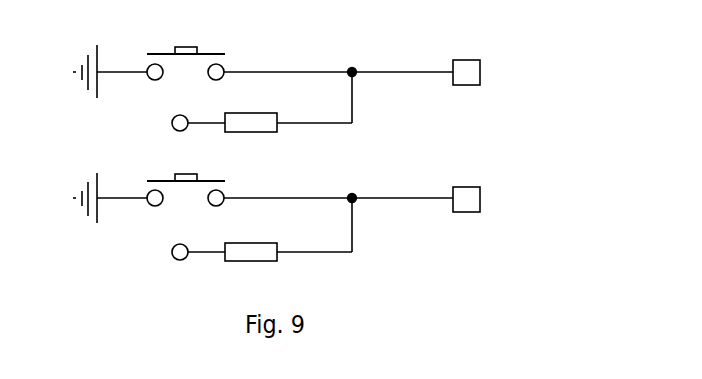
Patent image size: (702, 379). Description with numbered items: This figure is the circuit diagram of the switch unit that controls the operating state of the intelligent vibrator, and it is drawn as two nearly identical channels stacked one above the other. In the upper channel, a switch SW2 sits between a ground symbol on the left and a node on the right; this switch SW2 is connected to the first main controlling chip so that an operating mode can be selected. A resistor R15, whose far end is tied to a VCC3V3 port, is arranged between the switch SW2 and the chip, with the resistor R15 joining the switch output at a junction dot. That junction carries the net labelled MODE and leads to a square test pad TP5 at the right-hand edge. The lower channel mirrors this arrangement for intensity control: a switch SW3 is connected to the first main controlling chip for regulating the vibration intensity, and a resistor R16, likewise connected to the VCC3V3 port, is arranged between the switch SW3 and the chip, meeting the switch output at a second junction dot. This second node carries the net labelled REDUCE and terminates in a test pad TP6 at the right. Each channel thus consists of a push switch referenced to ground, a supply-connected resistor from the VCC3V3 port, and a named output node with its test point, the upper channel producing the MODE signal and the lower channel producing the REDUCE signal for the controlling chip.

The switch SW2 is at (212, 61).
The switch SW3 is at (212, 187).
The resistor R15 is at (270, 102).
The resistor R16 is at (270, 229).
The test point TP5 is at (453, 60).
The test point TP6 is at (453, 186).
The MODE signal net MODE is at (401, 61).
The REDUCE signal net REDUCE is at (401, 188).
The VCC3V3 port VCC3V3 is at (136, 187).